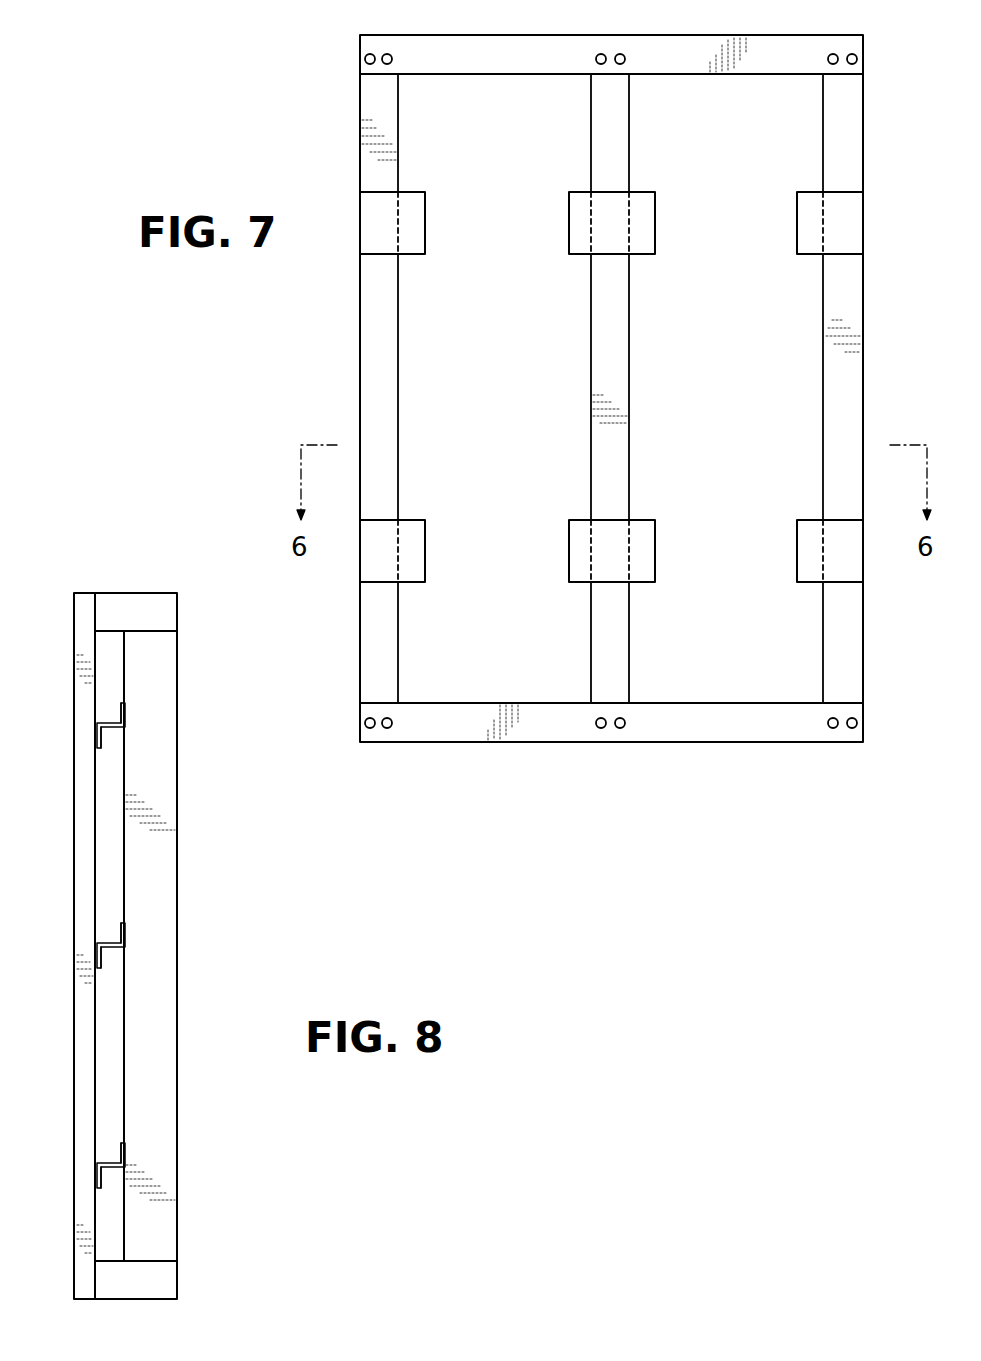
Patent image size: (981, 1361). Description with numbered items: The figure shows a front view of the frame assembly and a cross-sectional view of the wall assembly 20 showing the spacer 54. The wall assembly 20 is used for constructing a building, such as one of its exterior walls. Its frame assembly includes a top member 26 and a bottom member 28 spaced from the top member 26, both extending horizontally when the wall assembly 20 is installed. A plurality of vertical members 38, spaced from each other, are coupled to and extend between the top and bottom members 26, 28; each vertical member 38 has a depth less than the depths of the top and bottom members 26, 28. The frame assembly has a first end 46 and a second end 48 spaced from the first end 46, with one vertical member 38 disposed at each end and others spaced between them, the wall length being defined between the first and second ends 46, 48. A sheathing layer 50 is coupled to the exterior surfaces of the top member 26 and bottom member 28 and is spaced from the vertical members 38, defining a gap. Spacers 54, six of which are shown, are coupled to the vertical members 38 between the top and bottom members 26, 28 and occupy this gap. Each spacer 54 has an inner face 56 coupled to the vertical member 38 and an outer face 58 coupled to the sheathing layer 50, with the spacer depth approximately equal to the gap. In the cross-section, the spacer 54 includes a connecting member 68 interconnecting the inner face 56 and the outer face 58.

In FIG. 7, the wall assembly 20 is at (858, 22).
In FIG. 8, the wall assembly 20 is at (171, 577).
In FIG. 7, the top member 26 is at (675, 45).
In FIG. 8, the top member 26 is at (135, 607).
In FIG. 7, the bottom member 28 is at (697, 726).
In FIG. 8, the bottom member 28 is at (135, 1287).
In FIG. 7, the vertical members 38 is at (385, 400).
In FIG. 8, the vertical members 38 is at (155, 780).
In FIG. 7, the first end 46 is at (350, 652).
In FIG. 7, the second end 48 is at (880, 652).
In FIG. 8, the sheathing layer 50 is at (74, 860).
In FIG. 7, the spacer 54 is at (569, 232).
In FIG. 8, the inner face 56 is at (125, 713).
In FIG. 8, the outer face 58 is at (96, 734).
In FIG. 8, the connecting member 68 is at (108, 723).